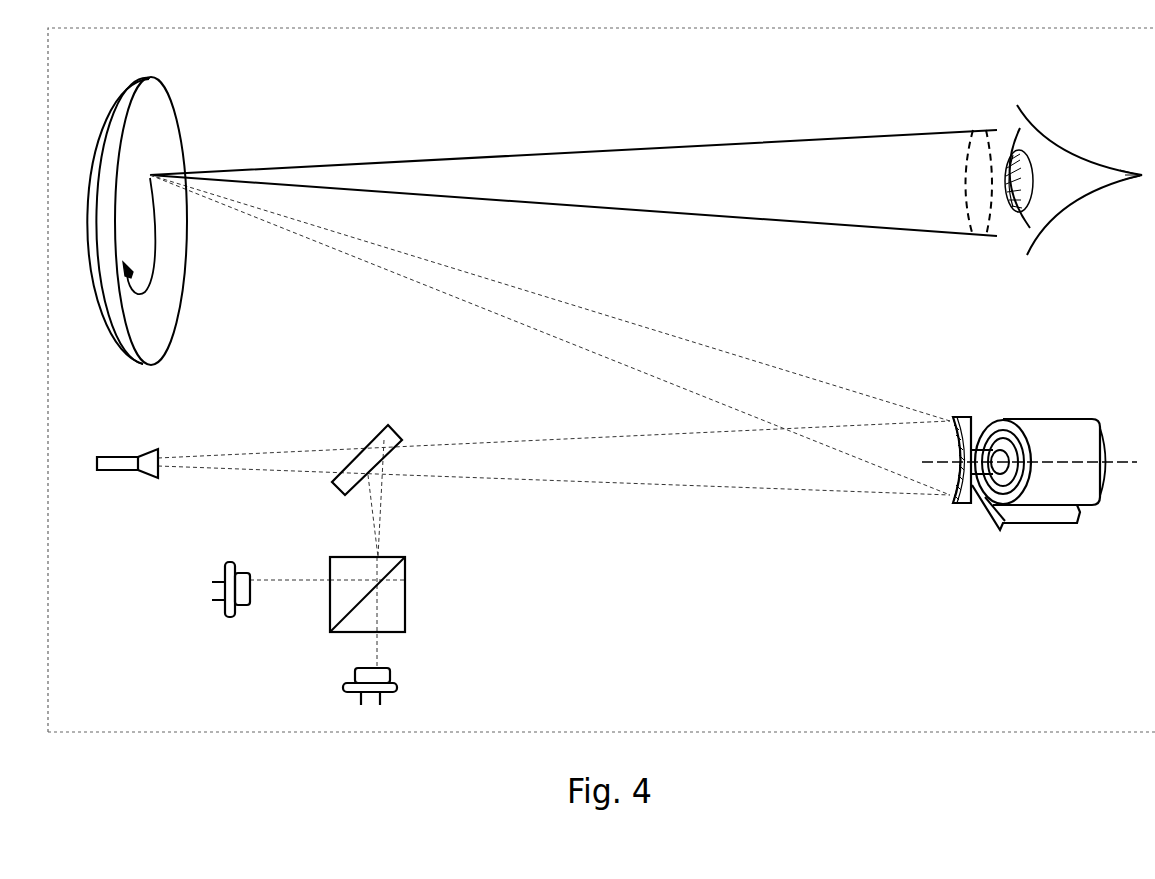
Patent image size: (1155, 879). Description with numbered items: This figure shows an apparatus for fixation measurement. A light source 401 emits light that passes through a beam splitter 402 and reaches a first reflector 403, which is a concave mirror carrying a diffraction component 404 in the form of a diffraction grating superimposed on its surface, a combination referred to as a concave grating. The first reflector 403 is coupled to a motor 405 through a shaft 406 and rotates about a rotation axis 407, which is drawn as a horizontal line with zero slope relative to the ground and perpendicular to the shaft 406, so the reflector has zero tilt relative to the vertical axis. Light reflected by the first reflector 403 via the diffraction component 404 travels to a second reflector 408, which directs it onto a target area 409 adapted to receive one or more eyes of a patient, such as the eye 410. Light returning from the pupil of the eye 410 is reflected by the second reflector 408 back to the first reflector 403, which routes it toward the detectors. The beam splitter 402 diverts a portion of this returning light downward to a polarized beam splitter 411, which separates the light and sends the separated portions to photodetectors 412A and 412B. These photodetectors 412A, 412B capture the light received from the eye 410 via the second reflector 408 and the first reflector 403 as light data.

The light source 401 is at (106, 472).
The beam splitter 402 is at (375, 440).
The first reflector 403 is at (968, 500).
The diffraction component 404 is at (945, 494).
The motor 405 is at (1067, 410).
The shaft 406 is at (980, 416).
The rotation axis 407 is at (1123, 470).
The second reflector 408 is at (172, 325).
The target area 409 is at (960, 197).
The eye 410 is at (1057, 220).
The polarized beam splitter 411 is at (407, 590).
The photodetector 412A is at (210, 605).
The photodetector 412B is at (340, 685).